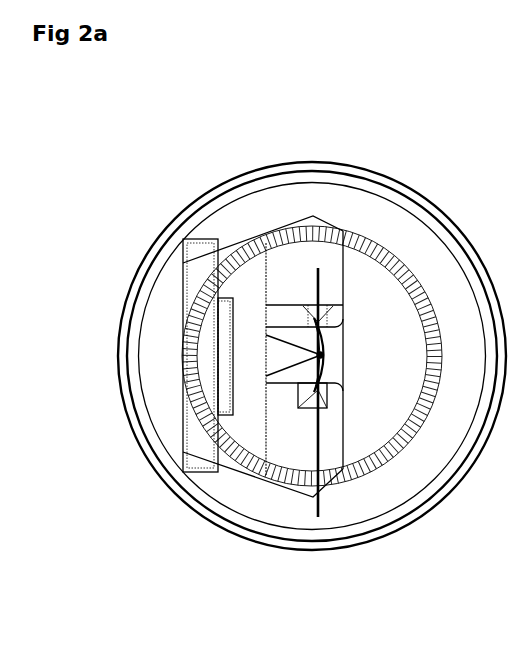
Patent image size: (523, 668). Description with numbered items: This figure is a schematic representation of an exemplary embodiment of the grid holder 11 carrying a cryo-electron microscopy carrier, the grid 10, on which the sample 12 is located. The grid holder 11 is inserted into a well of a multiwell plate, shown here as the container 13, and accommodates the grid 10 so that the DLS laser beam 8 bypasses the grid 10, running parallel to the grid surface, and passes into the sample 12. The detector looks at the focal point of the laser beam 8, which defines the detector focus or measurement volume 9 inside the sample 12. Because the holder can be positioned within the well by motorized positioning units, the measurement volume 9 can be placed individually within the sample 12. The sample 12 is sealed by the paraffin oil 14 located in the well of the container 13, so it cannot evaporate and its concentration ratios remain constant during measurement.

The DLS laser beam 8 is at (317, 453).
The detector focus/measurement volume 9 is at (325, 358).
The cryo-electron microscopy carrier (grid) 10 is at (318, 345).
The grid holder 11 is at (278, 508).
The sample 12 is at (327, 357).
The container 13 is at (130, 342).
The paraffin oil 14 is at (357, 293).